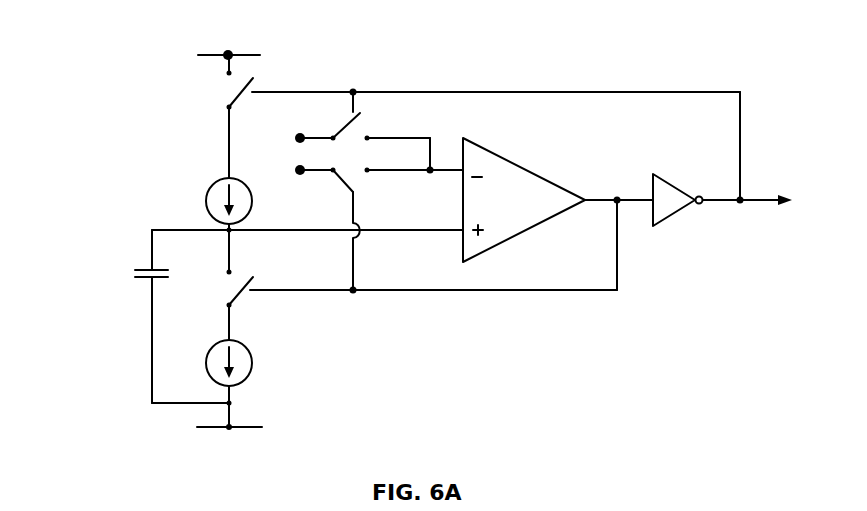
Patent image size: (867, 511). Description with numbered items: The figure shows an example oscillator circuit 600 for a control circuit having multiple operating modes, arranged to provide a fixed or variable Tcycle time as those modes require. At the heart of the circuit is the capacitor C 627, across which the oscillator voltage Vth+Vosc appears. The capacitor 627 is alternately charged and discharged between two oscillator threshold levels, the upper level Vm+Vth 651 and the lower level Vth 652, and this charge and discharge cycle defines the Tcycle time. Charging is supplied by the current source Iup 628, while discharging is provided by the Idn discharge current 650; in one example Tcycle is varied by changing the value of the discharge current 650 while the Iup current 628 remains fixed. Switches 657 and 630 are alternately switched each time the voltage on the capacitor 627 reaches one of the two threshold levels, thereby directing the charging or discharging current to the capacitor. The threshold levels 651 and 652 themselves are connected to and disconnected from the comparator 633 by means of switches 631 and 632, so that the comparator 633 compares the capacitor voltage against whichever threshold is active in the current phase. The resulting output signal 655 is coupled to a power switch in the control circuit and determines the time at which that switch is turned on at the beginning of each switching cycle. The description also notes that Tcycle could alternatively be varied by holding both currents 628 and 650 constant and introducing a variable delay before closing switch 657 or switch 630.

The oscillator circuit 600 is at (203, 40).
The switch 657 is at (222, 92).
The voltage level Vth 652 is at (270, 153).
The Iup current 628 is at (205, 185).
The capacitor C 627 is at (147, 265).
The switch 630 is at (227, 288).
The Idn discharge current 650 is at (217, 348).
The voltage level Vm+Vth 651 is at (298, 113).
The switch 631 is at (363, 123).
The switch 632 is at (362, 180).
The comparator 633 is at (558, 214).
The output signal 655 is at (798, 205).